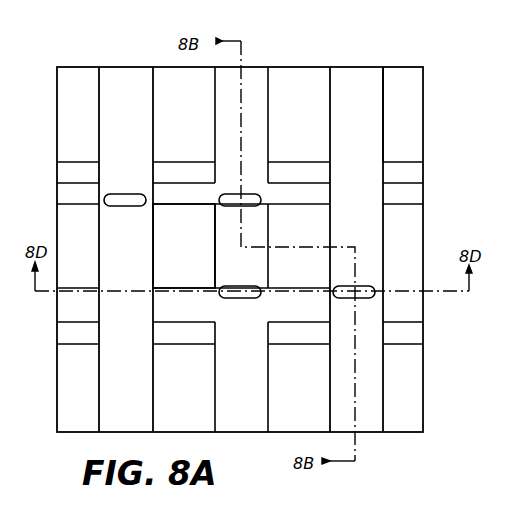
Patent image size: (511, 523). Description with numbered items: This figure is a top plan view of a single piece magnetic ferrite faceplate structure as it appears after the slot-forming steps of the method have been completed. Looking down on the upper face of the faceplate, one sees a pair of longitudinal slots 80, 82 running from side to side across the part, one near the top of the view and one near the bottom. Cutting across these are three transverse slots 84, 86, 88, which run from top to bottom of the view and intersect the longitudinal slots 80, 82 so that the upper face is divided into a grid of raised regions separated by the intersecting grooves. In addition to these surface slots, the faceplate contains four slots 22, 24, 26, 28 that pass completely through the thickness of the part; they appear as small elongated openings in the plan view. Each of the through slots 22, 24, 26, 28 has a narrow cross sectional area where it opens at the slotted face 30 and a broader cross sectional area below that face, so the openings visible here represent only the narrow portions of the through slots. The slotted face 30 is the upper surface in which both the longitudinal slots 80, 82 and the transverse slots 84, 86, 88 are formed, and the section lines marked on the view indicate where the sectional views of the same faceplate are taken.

The slot 22 is at (125, 198).
The slot 24 is at (244, 201).
The slot 26 is at (236, 292).
The slot 28 is at (364, 292).
The slotted face 30 is at (194, 257).
The longitudinal slot 80 is at (417, 177).
The longitudinal slot 82 is at (415, 337).
The transverse slot 84 is at (152, 89).
The transverse slot 86 is at (272, 121).
The transverse slot 88 is at (382, 88).